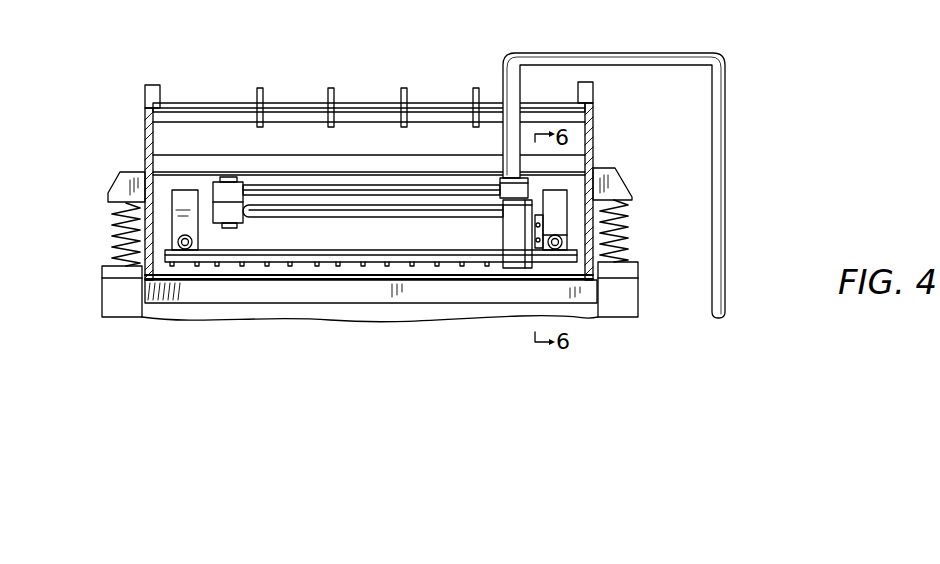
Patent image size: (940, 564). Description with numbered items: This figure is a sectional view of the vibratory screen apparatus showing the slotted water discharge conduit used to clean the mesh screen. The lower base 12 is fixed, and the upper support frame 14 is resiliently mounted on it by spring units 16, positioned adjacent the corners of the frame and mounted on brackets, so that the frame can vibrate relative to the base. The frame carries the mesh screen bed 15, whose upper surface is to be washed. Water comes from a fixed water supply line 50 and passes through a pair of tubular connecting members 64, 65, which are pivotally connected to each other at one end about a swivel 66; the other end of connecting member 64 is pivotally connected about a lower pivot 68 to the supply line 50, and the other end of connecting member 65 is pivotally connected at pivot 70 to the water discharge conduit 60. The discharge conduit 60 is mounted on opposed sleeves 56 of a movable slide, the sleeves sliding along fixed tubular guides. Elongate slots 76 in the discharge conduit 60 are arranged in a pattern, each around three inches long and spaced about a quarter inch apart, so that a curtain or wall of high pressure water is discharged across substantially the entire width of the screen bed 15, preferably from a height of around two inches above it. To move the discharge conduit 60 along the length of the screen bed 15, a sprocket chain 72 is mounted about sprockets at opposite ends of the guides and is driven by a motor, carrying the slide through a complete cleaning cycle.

The lower base 12 is at (124, 321).
The upper support frame 14 is at (597, 136).
The mesh screen bed 15 is at (190, 284).
The spring units 16 is at (110, 223).
The fixed water supply line 50 is at (575, 58).
The sleeves 56 is at (205, 242).
The water discharge conduit 60 is at (445, 262).
The tubular connecting member 64 is at (307, 187).
The tubular connecting member 65 is at (322, 213).
The swivel 66 is at (232, 178).
The lower pivot 68 is at (498, 180).
The pivot 70 is at (508, 213).
The sprocket chain 72 is at (538, 218).
The elongate slots 76 is at (280, 266).